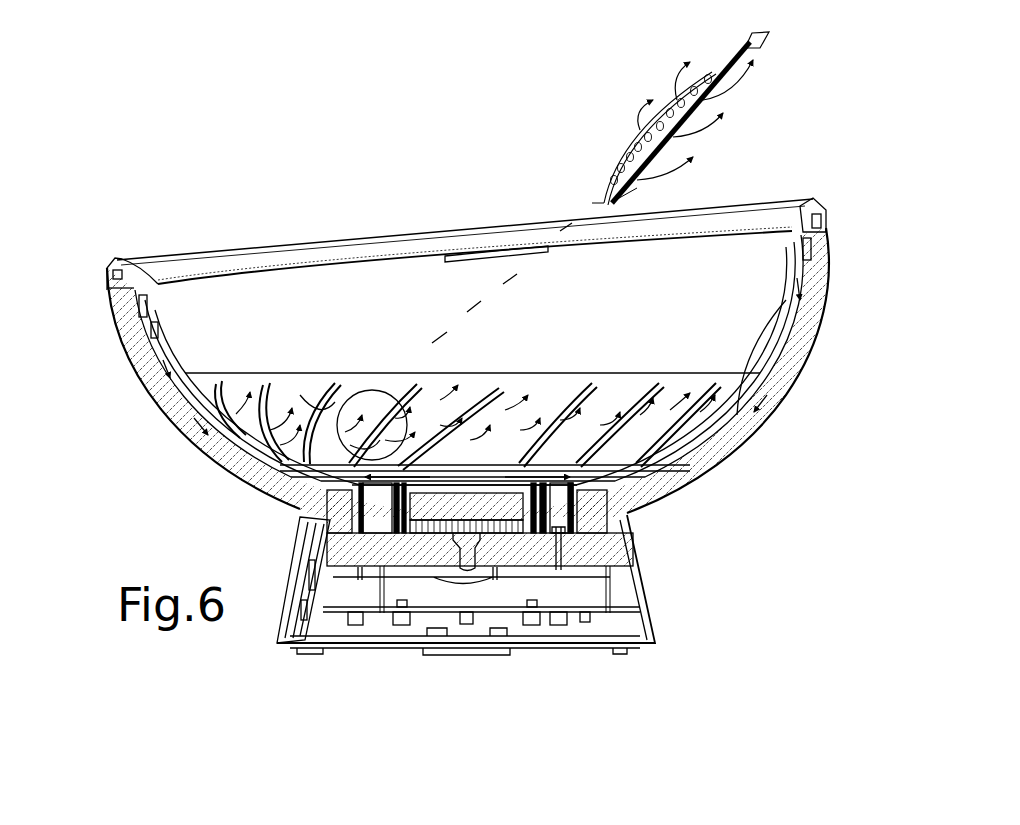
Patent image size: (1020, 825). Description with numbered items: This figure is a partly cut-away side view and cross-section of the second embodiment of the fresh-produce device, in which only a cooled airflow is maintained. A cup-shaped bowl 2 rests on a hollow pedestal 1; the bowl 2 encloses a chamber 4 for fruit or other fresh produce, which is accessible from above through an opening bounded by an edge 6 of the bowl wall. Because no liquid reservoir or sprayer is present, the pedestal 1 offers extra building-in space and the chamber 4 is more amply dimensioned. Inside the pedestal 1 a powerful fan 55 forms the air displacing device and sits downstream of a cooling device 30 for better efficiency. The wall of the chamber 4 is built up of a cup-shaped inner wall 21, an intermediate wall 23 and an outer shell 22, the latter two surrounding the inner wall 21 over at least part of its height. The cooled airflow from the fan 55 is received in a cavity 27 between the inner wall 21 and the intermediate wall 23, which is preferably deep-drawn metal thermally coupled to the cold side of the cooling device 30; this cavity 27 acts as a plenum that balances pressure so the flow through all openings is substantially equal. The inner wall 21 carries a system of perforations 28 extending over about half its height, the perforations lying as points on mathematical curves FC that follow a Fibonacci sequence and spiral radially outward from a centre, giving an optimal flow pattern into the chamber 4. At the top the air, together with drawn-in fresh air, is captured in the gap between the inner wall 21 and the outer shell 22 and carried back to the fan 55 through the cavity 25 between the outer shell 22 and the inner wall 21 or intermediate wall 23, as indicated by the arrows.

The hollow pedestal 1 is at (643, 650).
The cup-shaped bowl 2 is at (100, 285).
The chamber 4 is at (343, 305).
The edge 6 is at (828, 208).
The inner wall 21 is at (760, 372).
The outer shell 22 is at (203, 470).
The intermediate wall 23 is at (173, 417).
The cavity 25 is at (148, 392).
The cavity 27 is at (150, 345).
The system of perforations 28 is at (618, 182).
The cooling device 30 is at (300, 563).
The fan 55 is at (483, 505).
The mathematical curves FC is at (423, 383).